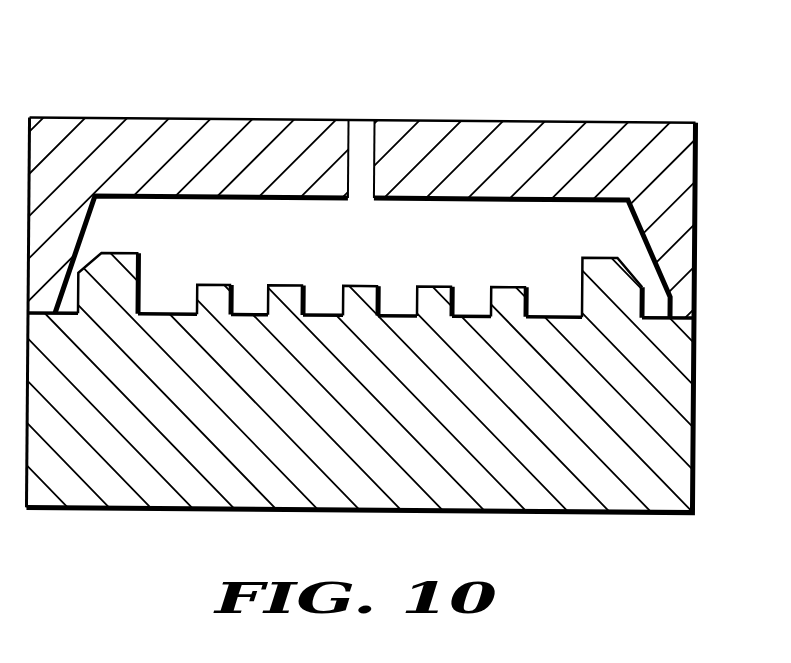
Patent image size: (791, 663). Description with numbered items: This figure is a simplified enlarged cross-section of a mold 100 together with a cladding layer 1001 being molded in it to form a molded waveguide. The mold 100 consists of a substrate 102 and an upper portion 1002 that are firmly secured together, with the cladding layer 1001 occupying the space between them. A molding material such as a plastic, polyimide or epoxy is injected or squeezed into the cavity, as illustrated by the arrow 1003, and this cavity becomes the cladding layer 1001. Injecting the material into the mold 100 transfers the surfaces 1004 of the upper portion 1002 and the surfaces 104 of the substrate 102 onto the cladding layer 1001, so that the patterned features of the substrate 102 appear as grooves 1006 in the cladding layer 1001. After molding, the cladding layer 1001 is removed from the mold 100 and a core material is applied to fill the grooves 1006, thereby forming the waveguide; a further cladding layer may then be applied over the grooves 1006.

The mold 100 is at (636, 564).
The substrate 102 is at (697, 400).
The surfaces 104 is at (177, 308).
The cladding layer 1001 is at (445, 247).
The upper portion 1002 is at (553, 120).
The arrow 1003 is at (361, 32).
The surfaces 1004 is at (216, 200).
The grooves 1006 is at (360, 282).